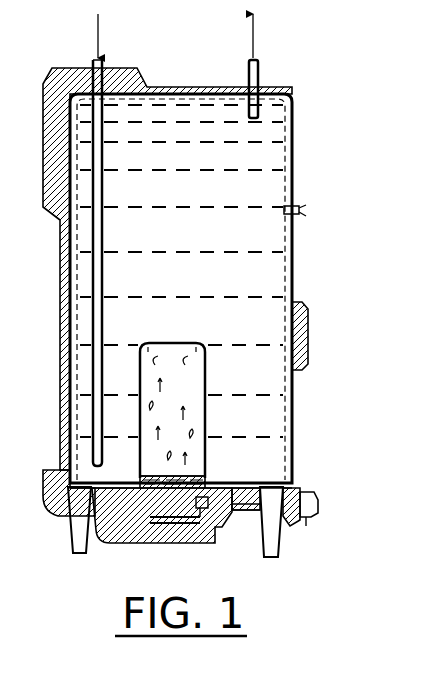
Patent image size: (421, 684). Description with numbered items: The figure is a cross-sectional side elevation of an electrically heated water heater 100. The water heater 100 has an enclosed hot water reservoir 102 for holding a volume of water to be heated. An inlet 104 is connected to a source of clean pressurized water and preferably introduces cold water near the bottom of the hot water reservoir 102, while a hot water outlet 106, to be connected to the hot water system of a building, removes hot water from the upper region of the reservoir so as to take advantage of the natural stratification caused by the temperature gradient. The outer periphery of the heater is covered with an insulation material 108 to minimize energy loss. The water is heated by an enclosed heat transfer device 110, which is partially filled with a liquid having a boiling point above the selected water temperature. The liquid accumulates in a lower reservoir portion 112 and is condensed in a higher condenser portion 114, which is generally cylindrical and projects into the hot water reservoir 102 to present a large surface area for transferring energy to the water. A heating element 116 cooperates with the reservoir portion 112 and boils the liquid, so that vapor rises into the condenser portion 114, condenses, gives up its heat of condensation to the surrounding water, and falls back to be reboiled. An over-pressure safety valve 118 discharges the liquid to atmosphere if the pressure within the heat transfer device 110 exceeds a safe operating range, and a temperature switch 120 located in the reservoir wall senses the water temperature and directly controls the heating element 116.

The water heater 100 is at (302, 92).
The hot water reservoir 102 is at (293, 163).
The inlet 104 is at (104, 63).
The hot water outlet 106 is at (259, 62).
The insulation material 108 is at (308, 312).
The heat transfer device 110 is at (207, 404).
The lower reservoir portion 112 is at (207, 478).
The condenser portion 114 is at (200, 345).
The heating element 116 is at (188, 523).
The over-pressure safety valve 118 is at (318, 498).
The temperature switch 120 is at (298, 210).